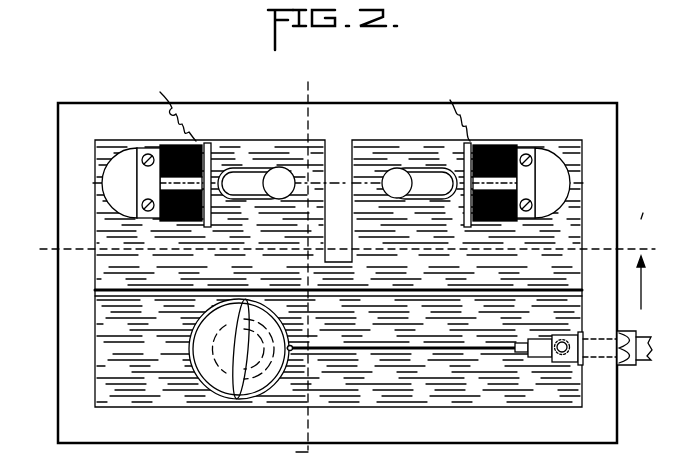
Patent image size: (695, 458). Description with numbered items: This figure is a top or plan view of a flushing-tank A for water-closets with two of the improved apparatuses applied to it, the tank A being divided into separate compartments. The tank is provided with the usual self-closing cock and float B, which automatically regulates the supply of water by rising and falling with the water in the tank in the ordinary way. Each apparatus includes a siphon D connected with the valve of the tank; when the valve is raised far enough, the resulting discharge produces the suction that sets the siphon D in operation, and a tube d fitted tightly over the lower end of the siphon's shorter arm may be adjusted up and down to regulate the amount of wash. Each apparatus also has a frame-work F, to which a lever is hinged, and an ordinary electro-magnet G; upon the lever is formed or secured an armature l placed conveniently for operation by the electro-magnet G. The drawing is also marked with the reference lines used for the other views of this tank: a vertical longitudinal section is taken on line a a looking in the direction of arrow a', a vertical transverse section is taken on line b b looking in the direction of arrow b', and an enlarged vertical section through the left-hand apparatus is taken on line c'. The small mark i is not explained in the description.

The tank A is at (319, 261).
The float B is at (420, 349).
The siphon D is at (337, 183).
The tube d is at (289, 196).
The electro-magnet G is at (192, 141).
The frame-work F is at (150, 220).
The armature l is at (212, 220).
The section line a a is at (344, 249).
The arrow a' is at (647, 282).
The section line b b is at (308, 256).
The arrow b' is at (333, 450).
The section line c' is at (330, 180).
The mark i is at (642, 216).